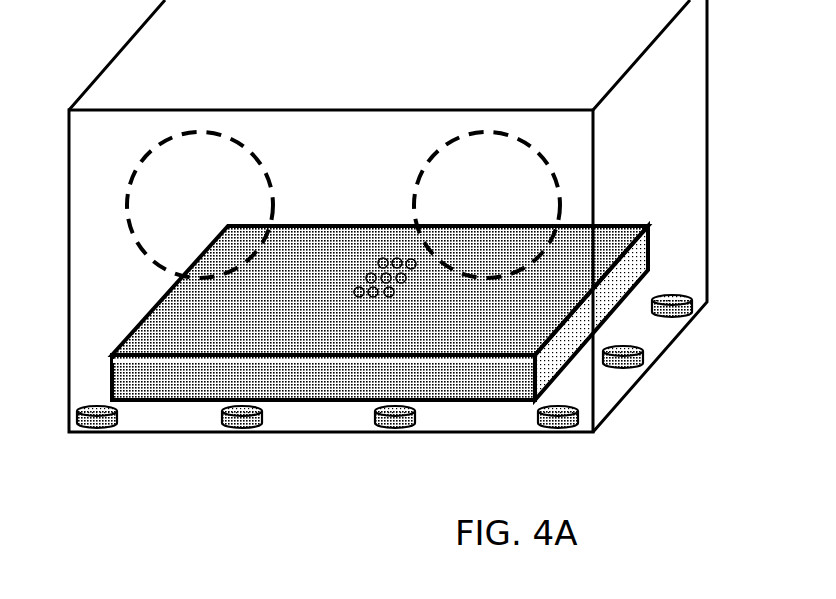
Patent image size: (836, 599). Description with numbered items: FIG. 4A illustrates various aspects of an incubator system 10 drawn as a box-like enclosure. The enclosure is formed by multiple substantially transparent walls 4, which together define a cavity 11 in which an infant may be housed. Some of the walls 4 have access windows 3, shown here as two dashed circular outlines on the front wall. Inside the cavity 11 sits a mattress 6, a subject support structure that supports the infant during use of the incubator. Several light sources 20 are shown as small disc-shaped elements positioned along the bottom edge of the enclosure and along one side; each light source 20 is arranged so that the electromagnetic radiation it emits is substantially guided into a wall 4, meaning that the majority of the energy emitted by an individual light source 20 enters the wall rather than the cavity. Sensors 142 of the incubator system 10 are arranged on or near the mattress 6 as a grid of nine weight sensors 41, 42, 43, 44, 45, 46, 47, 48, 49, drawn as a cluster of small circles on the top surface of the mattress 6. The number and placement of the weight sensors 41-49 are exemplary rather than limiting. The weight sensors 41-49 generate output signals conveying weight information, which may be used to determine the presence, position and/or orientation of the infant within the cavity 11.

The access windows 3 is at (343, 204).
The transparent walls 4 is at (607, 392).
The mattress 6 is at (152, 376).
The incubator system 10 is at (138, 452).
The cavity 11 is at (118, 276).
The light sources 20 is at (424, 438).
The weight sensor 41 is at (360, 316).
The weight sensor 42 is at (377, 316).
The weight sensor 43 is at (393, 316).
The weight sensor 44 is at (365, 268).
The weight sensor 45 is at (399, 254).
The weight sensor 46 is at (410, 292).
The weight sensor 47 is at (382, 254).
The weight sensor 48 is at (410, 252).
The weight sensor 49 is at (420, 277).
The sensors 142 is at (360, 349).